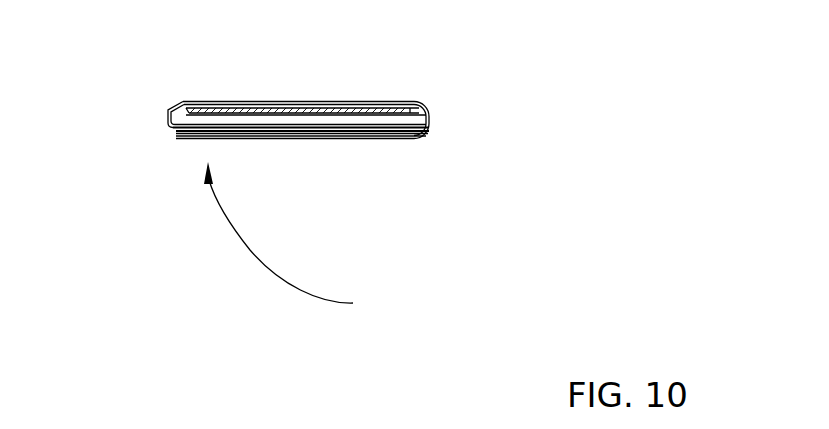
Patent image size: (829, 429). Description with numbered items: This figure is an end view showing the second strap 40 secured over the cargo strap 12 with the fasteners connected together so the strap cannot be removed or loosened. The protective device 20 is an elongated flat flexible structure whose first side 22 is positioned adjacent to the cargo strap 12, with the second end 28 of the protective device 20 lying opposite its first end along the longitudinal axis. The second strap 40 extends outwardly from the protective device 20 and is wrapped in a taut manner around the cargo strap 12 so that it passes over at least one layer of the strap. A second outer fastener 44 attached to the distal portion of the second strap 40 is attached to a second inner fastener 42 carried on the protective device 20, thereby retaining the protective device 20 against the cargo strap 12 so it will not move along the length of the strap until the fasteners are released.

The protective device 20 is at (186, 144).
The first side 22 is at (418, 104).
The second strap 40 is at (358, 102).
The cargo strap 12 is at (286, 108).
The second end 28 is at (376, 120).
The second inner fastener 42 is at (252, 128).
The second outer fastener 44 is at (340, 130).